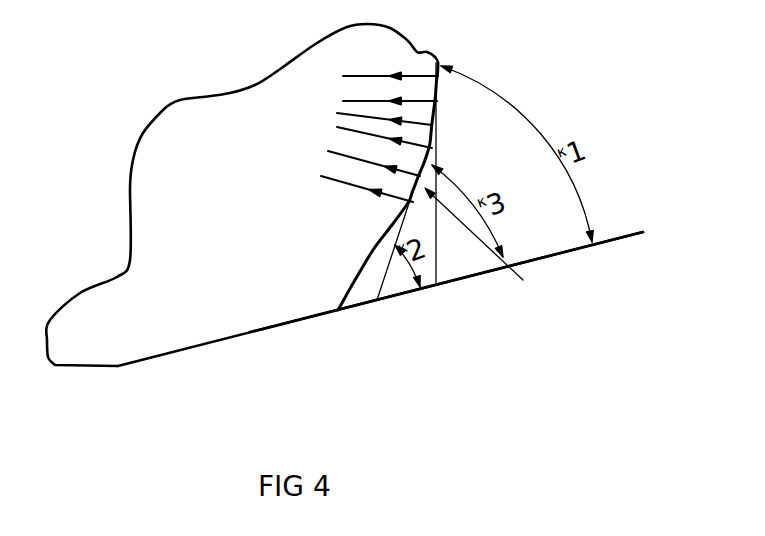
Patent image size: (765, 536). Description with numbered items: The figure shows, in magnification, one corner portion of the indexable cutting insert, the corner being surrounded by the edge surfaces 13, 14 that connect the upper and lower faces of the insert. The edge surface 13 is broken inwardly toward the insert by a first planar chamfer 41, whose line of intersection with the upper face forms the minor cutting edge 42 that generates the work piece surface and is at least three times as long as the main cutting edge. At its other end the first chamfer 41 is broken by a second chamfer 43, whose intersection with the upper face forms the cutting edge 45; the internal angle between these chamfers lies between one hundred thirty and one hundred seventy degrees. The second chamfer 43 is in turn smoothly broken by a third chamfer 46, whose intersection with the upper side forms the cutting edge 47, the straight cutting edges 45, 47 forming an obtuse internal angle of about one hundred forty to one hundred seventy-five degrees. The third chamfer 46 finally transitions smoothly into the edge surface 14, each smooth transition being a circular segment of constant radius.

The edge surface 13 is at (87, 370).
The edge surface 14 is at (458, 71).
The first planar chamfer 41 is at (200, 357).
The minor cutting edge 42 is at (275, 326).
The second chamfer 43 is at (359, 303).
The cutting edge 45 is at (364, 266).
The third chamfer 46 is at (491, 247).
The cutting edge 47 is at (433, 147).